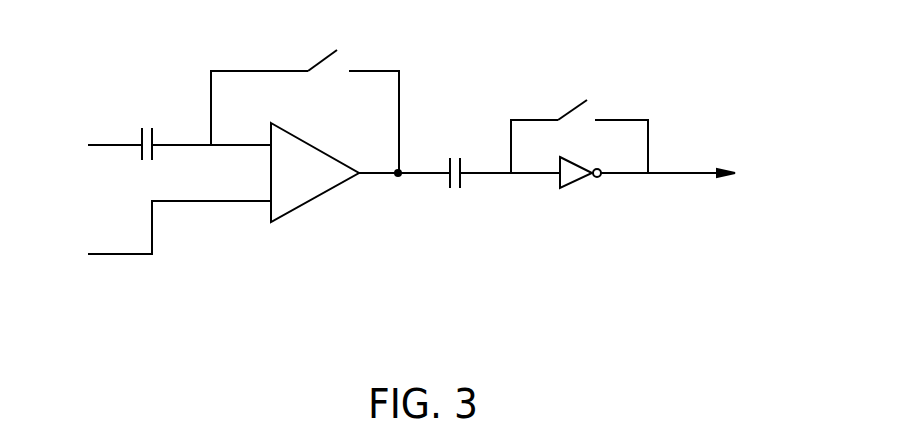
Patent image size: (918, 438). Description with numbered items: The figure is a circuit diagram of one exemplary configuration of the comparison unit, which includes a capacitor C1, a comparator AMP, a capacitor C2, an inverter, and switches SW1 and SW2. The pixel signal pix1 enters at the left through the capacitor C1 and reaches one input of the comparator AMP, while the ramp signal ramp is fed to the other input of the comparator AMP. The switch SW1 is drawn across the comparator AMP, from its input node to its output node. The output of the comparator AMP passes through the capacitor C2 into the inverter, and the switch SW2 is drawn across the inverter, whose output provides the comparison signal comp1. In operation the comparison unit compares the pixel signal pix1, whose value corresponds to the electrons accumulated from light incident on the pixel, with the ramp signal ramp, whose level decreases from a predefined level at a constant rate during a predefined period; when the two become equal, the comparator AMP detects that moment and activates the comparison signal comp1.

The pixel signal pix1 is at (89, 146).
The capacitor C1 is at (148, 158).
The switch SW1 is at (305, 99).
The comparator AMP is at (315, 172).
The ramp signal ramp is at (149, 234).
The capacitor C2 is at (455, 187).
The switch SW2 is at (579, 123).
The comparison signal comp1 is at (707, 174).